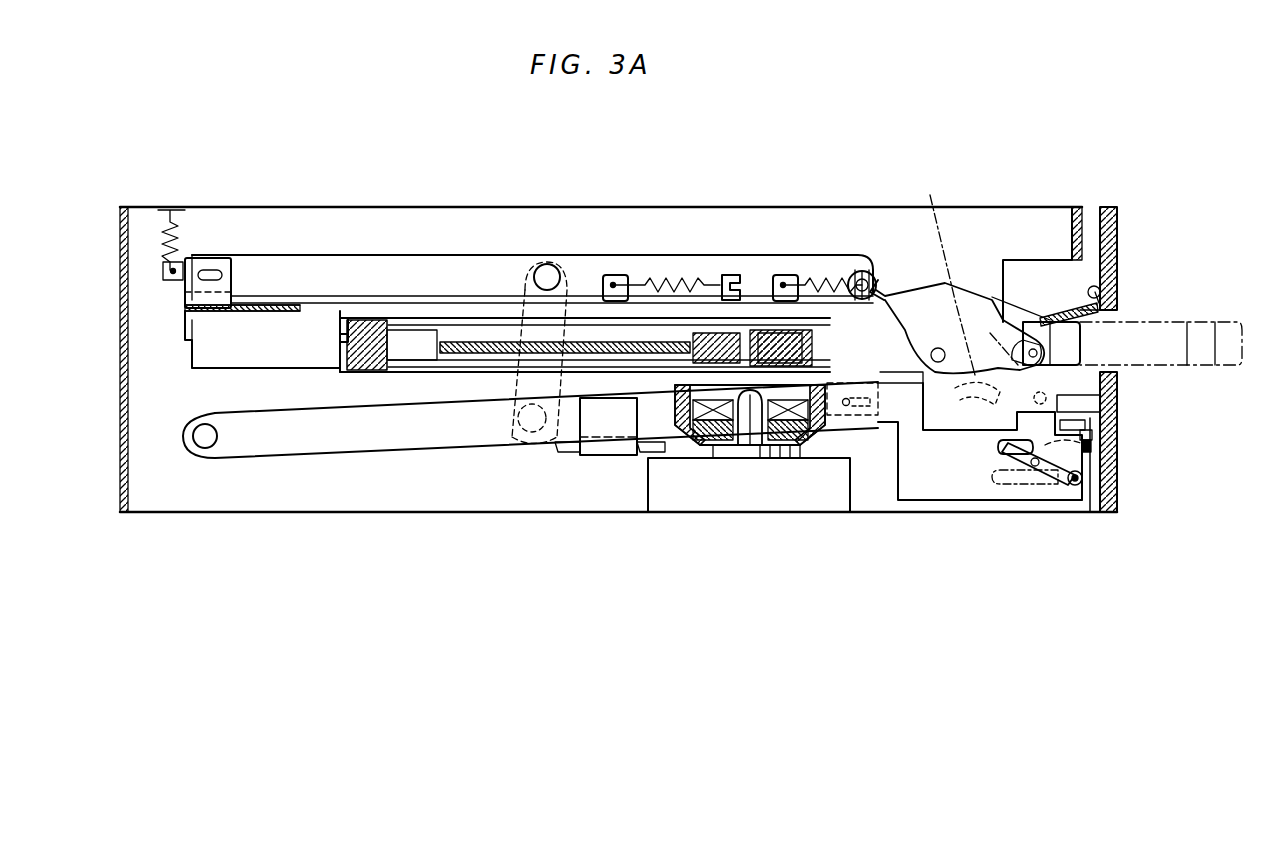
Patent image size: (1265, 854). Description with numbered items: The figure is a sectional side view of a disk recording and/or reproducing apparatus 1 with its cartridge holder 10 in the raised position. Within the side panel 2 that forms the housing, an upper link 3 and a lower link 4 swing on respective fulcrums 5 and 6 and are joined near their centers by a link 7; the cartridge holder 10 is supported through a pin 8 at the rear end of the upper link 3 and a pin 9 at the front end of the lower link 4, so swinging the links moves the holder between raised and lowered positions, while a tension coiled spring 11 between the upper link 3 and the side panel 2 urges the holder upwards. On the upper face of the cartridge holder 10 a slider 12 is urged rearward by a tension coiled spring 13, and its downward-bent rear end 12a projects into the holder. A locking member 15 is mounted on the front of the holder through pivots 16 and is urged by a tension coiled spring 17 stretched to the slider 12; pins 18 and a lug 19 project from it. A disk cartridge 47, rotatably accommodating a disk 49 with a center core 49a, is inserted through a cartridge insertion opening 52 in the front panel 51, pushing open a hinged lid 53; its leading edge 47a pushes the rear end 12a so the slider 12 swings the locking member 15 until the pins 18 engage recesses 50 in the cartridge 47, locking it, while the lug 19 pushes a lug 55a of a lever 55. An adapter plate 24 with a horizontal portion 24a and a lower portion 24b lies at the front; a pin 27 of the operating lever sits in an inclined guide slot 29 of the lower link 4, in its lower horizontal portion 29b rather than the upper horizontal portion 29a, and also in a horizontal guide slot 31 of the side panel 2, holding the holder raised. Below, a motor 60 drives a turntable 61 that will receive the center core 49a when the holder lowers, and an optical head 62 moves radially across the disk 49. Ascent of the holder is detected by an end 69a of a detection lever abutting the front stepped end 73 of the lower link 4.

The disk recording and/or reproducing apparatus 1 is at (291, 197).
The side panel 2 is at (312, 210).
The upper link 3 is at (440, 262).
The lower link 4 is at (352, 443).
The fulcrum 5 is at (866, 285).
The fulcrum 6 is at (205, 442).
The link 7 is at (515, 386).
The pin 8 is at (213, 273).
The pin 9 is at (848, 408).
The cartridge holder 10 is at (250, 362).
The tension coiled spring 11 is at (183, 232).
The slider 12 is at (587, 294).
The rear end of the slider 12a is at (340, 326).
The tension coiled spring 13 is at (673, 290).
The locking member 15 is at (920, 300).
The pivot 16 is at (935, 350).
The tension coiled spring 17 is at (812, 290).
The pin 18 is at (995, 392).
The lug 19 is at (1045, 410).
The adapter plate 24 is at (1117, 378).
The horizontal portion of the adapter plate 24a is at (1074, 410).
The wall lower part 24b is at (1120, 502).
The pin 27 is at (1078, 486).
The inclined guide slot 29 is at (1028, 460).
The upper horizontal portion of the inclined guide slot 29a is at (1003, 446).
The lower horizontal portion of the inclined guide slot 29b is at (1060, 482).
The horizontal guide slot 31 is at (1000, 478).
The disk cartridge 47 is at (417, 315).
The edge of the disk cartridge 47a is at (345, 340).
The disk 49 is at (462, 355).
The center core of the disk 49a is at (768, 345).
The recess 50 is at (1033, 330).
The front panel 51 is at (1118, 243).
The cartridge insertion opening 52 is at (1110, 317).
The lid 53 is at (1060, 300).
The lever 55 is at (1100, 420).
The lug 55a is at (1093, 458).
The motor 60 is at (708, 500).
The turntable 61 is at (800, 452).
The optical head 62 is at (610, 456).
The end of the lever 69a is at (1092, 433).
The front stepped end of the link 73 is at (1095, 446).